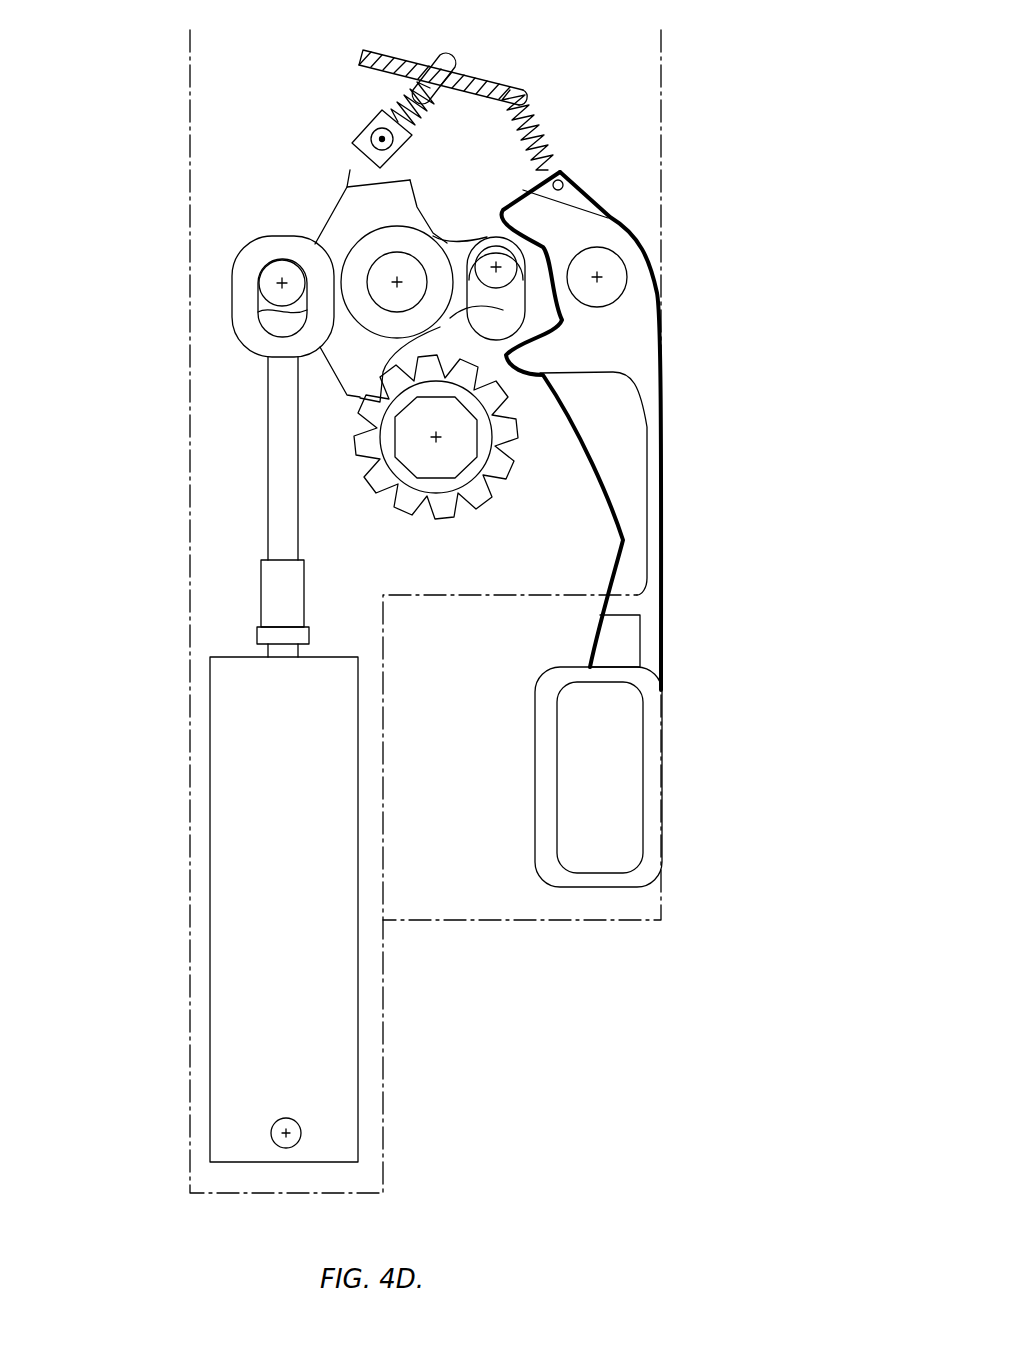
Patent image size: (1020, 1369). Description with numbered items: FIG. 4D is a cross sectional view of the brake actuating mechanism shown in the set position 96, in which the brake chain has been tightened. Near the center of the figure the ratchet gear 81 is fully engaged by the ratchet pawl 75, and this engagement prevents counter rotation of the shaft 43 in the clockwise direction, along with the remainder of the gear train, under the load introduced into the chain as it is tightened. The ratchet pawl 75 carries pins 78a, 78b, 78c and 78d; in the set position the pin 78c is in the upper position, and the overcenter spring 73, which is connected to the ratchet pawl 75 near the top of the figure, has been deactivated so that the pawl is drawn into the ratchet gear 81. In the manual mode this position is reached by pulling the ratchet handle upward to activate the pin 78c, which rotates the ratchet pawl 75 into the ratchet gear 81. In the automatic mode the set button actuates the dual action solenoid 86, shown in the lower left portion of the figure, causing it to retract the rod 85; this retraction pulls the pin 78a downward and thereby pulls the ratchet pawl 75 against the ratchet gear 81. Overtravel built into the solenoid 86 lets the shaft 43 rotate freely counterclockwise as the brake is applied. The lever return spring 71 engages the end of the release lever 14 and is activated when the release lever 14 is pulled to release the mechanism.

The release lever 14 is at (645, 605).
The shaft 43 is at (420, 457).
The lever return spring 71 is at (548, 133).
The overcenter spring 73 is at (383, 97).
The ratchet pawl 75 is at (347, 235).
The pin 78a is at (280, 283).
The pivot 78b is at (393, 263).
The pin 78c is at (492, 250).
The pivot 78d is at (611, 282).
The ratchet gear 81 is at (502, 430).
The rod 85 is at (283, 447).
The dual action solenoid 86 is at (258, 985).
The set position 96 is at (785, 214).